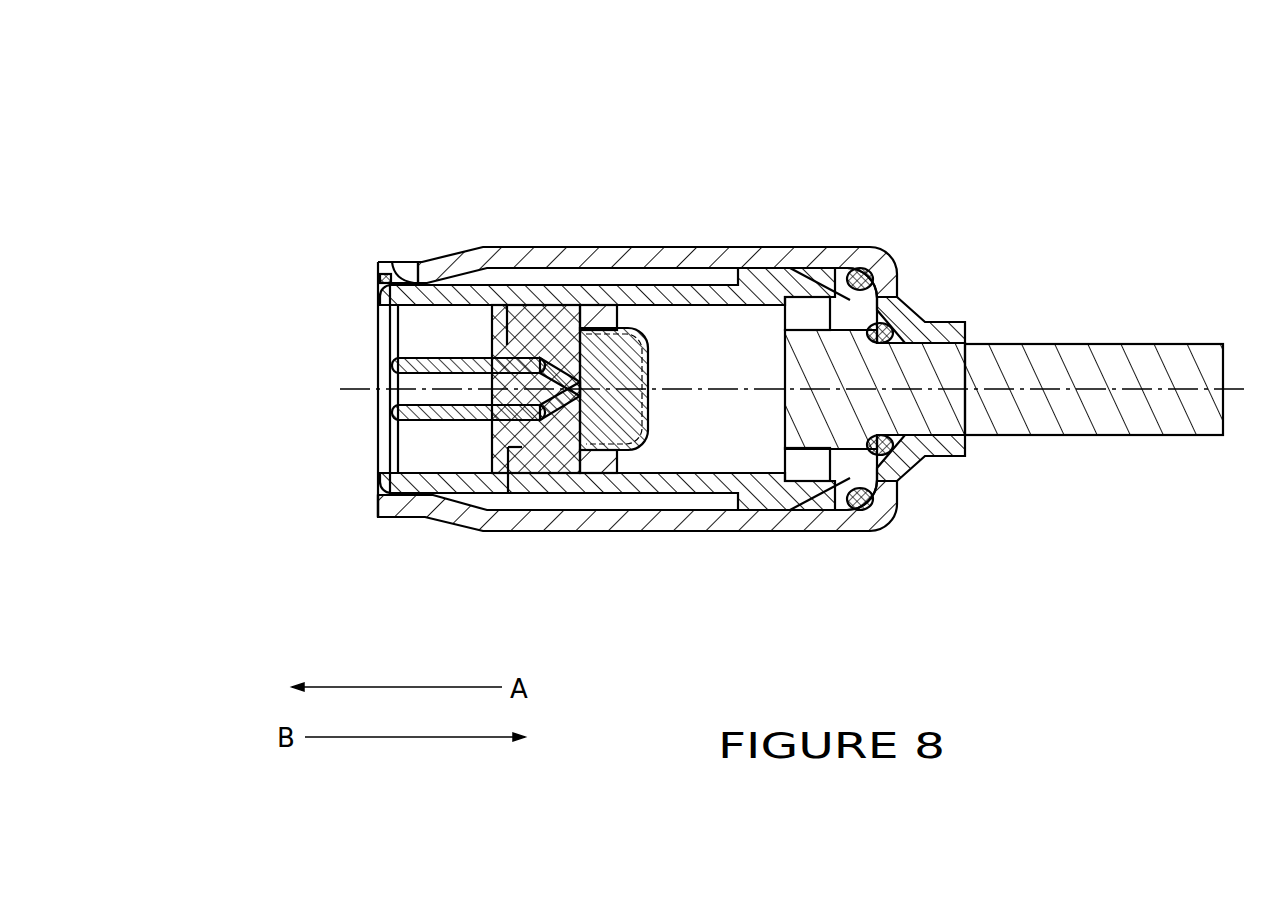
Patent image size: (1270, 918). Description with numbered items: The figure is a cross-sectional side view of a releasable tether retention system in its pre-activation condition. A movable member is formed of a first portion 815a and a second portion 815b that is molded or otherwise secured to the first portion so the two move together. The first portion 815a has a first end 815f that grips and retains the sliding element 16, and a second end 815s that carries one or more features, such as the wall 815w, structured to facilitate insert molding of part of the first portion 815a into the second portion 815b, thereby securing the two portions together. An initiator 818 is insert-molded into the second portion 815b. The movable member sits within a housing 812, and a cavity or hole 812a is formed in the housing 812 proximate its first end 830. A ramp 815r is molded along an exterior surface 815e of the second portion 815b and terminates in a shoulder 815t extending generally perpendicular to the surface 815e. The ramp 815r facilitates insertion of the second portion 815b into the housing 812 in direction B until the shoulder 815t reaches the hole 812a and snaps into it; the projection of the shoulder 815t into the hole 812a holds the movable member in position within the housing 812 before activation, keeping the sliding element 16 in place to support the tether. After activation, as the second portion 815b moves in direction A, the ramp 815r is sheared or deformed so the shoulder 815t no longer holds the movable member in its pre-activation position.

The housing 812 is at (637, 326).
The cavity or hole 812a is at (338, 212).
The ramp 815r is at (465, 209).
The exterior surface 815e is at (607, 244).
The shoulder 815t is at (286, 245).
The first portion 815a is at (866, 233).
The sliding element 16 is at (1094, 330).
The first end 830 is at (301, 400).
The second portion 815b is at (333, 545).
The second end 815s is at (458, 522).
The wall 815w is at (607, 538).
The initiator 818 is at (715, 483).
The first end 815f is at (905, 523).